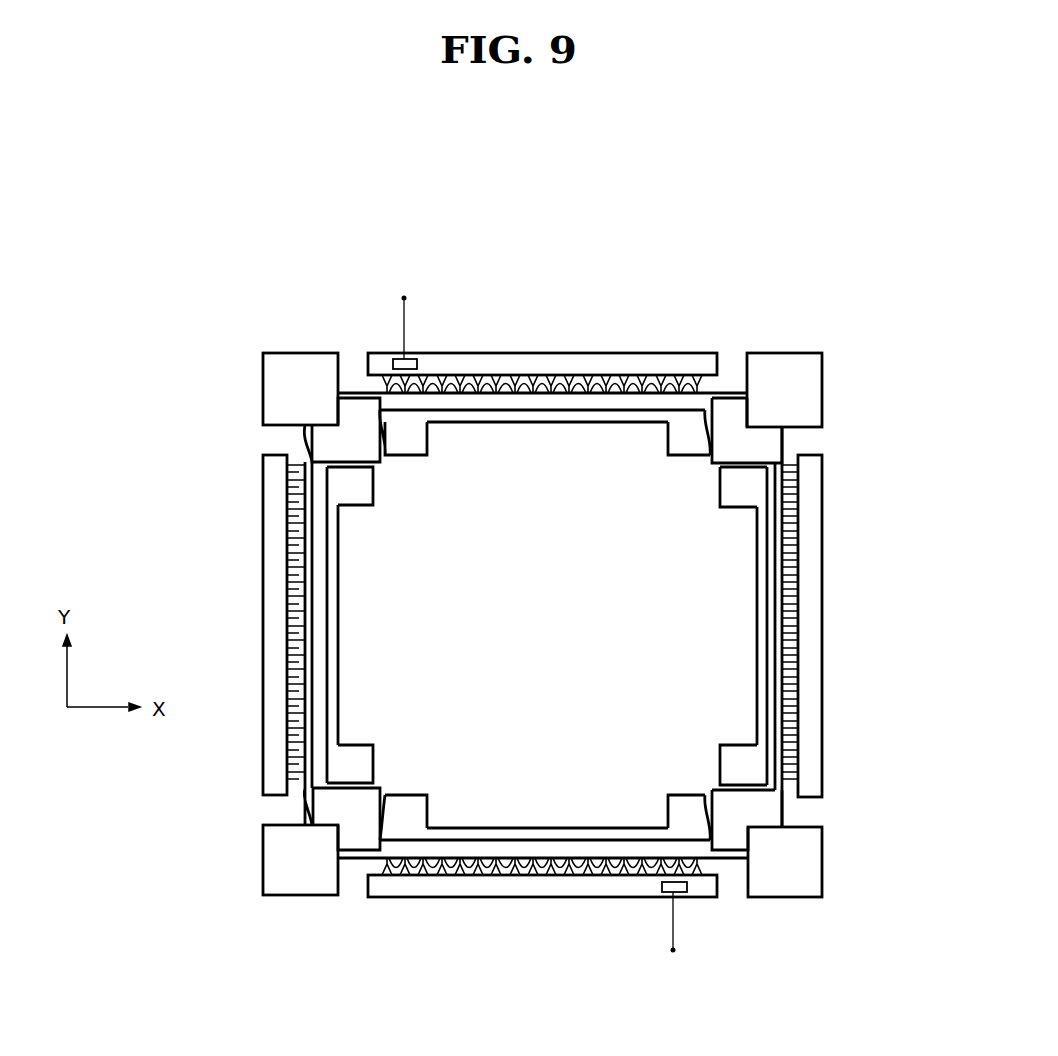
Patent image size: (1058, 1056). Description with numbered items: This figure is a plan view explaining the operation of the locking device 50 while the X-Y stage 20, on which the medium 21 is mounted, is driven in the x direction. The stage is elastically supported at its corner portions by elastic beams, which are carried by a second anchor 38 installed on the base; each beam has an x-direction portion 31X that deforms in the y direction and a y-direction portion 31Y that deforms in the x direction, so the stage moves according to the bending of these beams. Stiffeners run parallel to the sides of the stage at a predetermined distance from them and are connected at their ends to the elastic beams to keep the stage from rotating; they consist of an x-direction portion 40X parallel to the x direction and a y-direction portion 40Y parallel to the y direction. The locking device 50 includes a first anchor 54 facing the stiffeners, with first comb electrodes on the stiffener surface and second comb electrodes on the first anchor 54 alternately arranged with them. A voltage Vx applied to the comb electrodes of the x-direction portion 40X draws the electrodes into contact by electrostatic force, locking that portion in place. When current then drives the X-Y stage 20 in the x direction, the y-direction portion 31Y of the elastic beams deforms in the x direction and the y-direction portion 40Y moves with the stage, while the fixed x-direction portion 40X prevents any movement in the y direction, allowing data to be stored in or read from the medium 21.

The X-Y stage 20 is at (547, 625).
The medium 21 is at (581, 616).
The x-direction portion of the elastic beams 31X is at (733, 463).
The y-direction portion of the elastic beams 31Y is at (710, 438).
The second anchor 38 is at (815, 882).
The x-direction portion of the stiffeners 40X is at (523, 847).
The y-direction portion of the stiffeners 40Y is at (318, 625).
The locking device 50 is at (542, 651).
The first anchor 54 is at (430, 898).